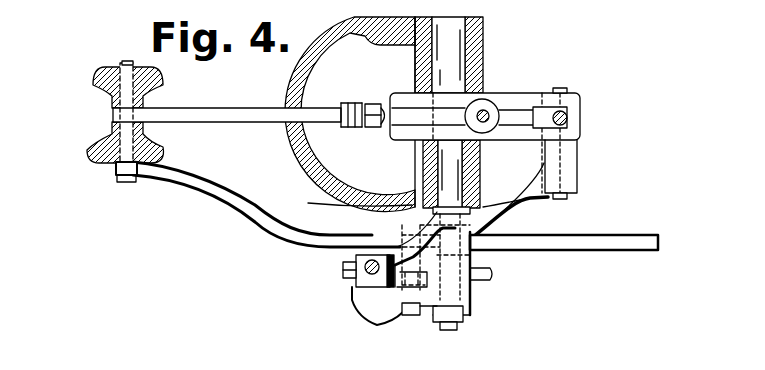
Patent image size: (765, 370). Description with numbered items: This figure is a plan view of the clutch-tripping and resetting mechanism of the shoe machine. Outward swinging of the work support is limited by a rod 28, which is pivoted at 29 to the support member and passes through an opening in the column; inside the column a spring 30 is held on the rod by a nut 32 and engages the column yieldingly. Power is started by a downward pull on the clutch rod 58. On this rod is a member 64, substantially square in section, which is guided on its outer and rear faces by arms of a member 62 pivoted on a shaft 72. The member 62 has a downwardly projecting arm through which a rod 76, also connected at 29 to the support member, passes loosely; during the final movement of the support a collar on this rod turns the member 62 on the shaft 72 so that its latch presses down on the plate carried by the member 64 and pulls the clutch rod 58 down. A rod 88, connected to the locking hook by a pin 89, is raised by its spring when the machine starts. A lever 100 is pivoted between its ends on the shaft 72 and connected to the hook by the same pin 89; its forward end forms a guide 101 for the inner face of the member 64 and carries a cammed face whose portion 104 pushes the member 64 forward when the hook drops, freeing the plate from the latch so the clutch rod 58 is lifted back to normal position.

The rod 28 is at (182, 113).
The pivot 29 is at (128, 143).
The spring 30 is at (350, 103).
The nut 32 is at (371, 103).
The clutch rod 58 is at (367, 266).
The member 62 is at (450, 292).
The member 64 is at (378, 282).
The shaft 72 is at (443, 182).
The rod 76 is at (200, 185).
The rod 88 is at (580, 112).
The pin 89 is at (560, 88).
The lever 100 is at (510, 207).
The guide 101 is at (372, 252).
The portion 104 is at (418, 208).